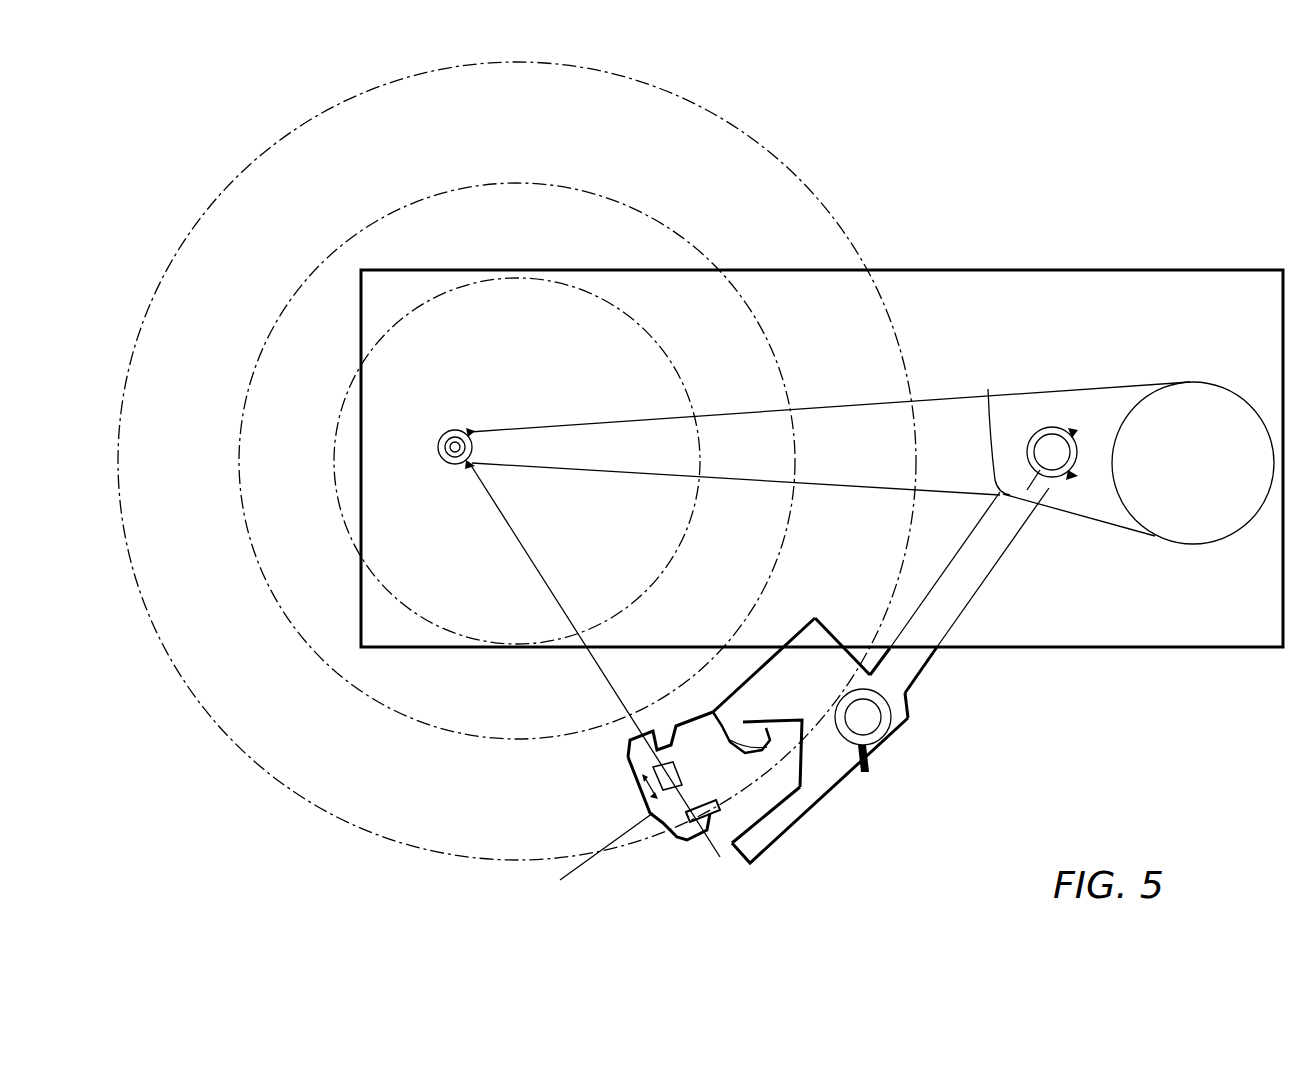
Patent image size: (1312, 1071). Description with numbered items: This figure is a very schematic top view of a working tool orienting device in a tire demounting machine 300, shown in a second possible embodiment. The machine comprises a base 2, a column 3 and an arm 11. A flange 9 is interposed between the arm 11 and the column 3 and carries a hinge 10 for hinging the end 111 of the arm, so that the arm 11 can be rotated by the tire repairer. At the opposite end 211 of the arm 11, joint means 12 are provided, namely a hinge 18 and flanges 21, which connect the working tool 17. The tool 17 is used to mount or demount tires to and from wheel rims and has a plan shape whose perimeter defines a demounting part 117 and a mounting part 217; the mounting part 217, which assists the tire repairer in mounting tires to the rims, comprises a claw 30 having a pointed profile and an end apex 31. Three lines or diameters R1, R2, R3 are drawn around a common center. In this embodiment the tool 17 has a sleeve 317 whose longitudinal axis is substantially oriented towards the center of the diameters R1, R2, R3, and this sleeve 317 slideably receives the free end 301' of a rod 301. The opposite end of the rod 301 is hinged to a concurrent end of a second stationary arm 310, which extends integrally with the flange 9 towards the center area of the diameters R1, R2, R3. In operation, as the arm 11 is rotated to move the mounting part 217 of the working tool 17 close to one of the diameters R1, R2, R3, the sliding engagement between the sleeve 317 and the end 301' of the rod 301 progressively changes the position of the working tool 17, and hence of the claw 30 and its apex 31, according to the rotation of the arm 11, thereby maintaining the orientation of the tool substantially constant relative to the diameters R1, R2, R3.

The base 2 is at (1213, 630).
The column 3 is at (1183, 418).
The flange 9 is at (1091, 418).
The hinge 10 is at (1047, 425).
The arm 11 is at (995, 586).
The joint means 12 is at (912, 750).
The tool 17 is at (622, 806).
The hinge 18 is at (857, 777).
The flanges 21 is at (823, 687).
The claw 30 is at (712, 712).
The end apex 31 is at (800, 718).
The end of the arm 111 is at (1027, 490).
The demounting part 117 is at (683, 843).
The end of the arm 211 is at (900, 691).
The mounting part 217 is at (760, 767).
The tire demounting machine 300 is at (822, 414).
The rod 301 is at (596, 662).
The free end of the rod 301' is at (580, 861).
The second stationary arm 310 is at (747, 460).
The sleeve 317 is at (625, 768).
The diameter R1 is at (673, 357).
The diameter R2 is at (773, 357).
The diameter R3 is at (890, 333).